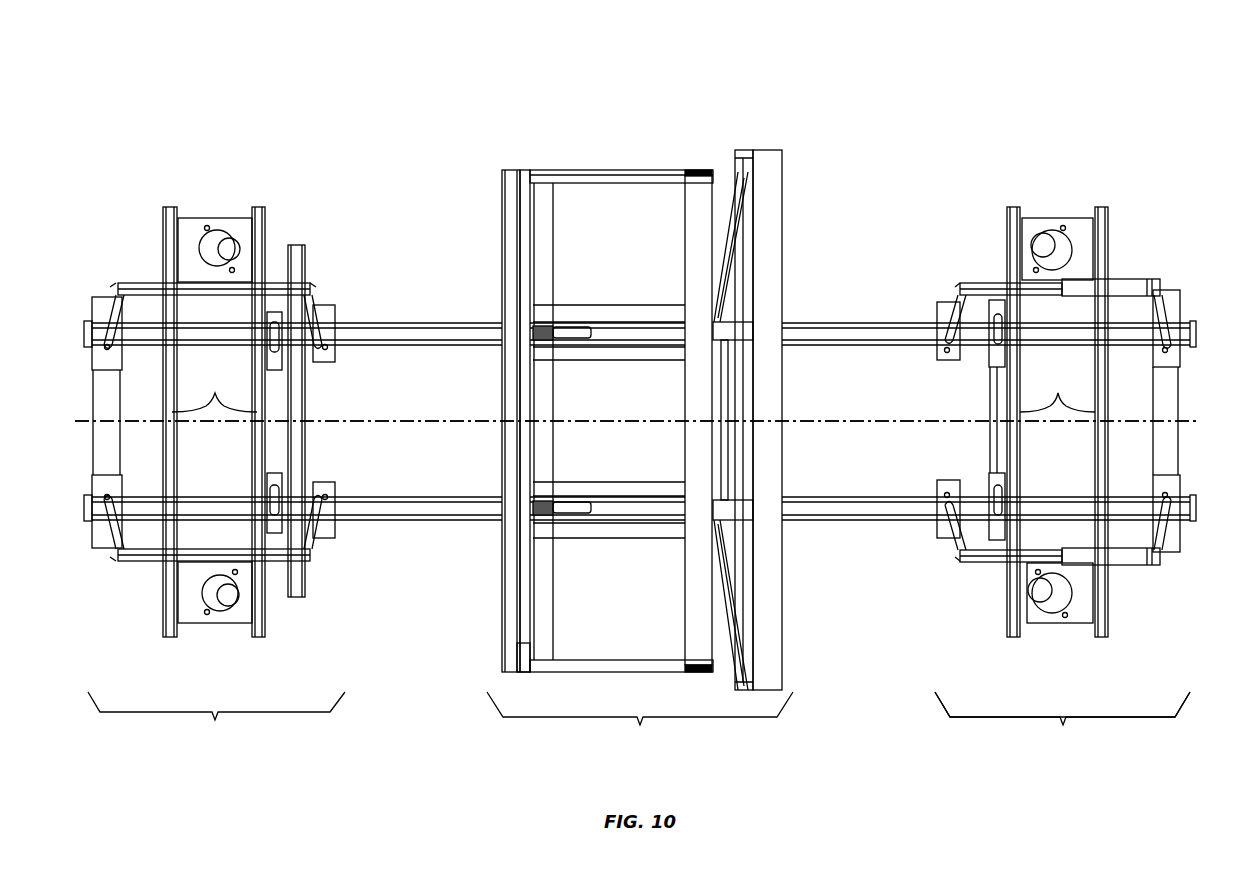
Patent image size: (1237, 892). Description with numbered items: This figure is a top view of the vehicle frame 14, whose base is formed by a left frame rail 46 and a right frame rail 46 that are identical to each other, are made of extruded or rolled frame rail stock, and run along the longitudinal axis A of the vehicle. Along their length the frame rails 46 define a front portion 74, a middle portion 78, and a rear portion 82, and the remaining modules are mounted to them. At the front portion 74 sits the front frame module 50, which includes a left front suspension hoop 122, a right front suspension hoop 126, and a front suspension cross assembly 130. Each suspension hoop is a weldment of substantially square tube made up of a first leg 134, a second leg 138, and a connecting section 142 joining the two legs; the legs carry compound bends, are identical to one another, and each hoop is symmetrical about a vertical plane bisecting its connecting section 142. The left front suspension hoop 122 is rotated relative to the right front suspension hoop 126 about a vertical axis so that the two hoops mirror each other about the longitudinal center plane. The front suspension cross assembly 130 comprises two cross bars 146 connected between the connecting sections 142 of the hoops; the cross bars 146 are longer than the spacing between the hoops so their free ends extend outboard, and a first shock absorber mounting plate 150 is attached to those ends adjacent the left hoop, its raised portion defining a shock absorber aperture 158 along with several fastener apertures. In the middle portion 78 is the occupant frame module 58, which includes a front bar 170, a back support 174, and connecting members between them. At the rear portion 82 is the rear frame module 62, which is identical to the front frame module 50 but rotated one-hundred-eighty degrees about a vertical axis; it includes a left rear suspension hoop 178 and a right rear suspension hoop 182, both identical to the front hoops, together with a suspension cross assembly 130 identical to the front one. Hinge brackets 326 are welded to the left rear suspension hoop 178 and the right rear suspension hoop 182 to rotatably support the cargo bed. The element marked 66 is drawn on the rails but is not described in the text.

The frame 14 is at (385, 95).
The frame rails 46 is at (430, 325).
The front frame module 50 is at (312, 288).
The occupant frame module 58 is at (645, 137).
The rear frame module 62 is at (987, 182).
The grate bars 66 is at (112, 437).
The front portion 74 is at (216, 724).
The middle portion 78 is at (640, 726).
The rear portion 82 is at (1062, 726).
The left front suspension hoop 122 is at (118, 558).
The right front suspension hoop 126 is at (118, 288).
The front suspension cross assembly 130 is at (218, 190).
The first leg 134 is at (325, 322).
The second leg 138 is at (103, 313).
The connecting section 142 is at (195, 290).
The cross bars 146 is at (633, 392).
The first shock absorber mounting plate 150 is at (195, 227).
The shock absorber aperture 158 is at (228, 232).
The front bar 170 is at (533, 205).
The back support 174 is at (766, 175).
The left rear suspension hoop 178 is at (960, 556).
The right rear suspension hoop 182 is at (960, 290).
The hinge brackets 326 is at (1130, 290).
The longitudinal axis A is at (826, 415).